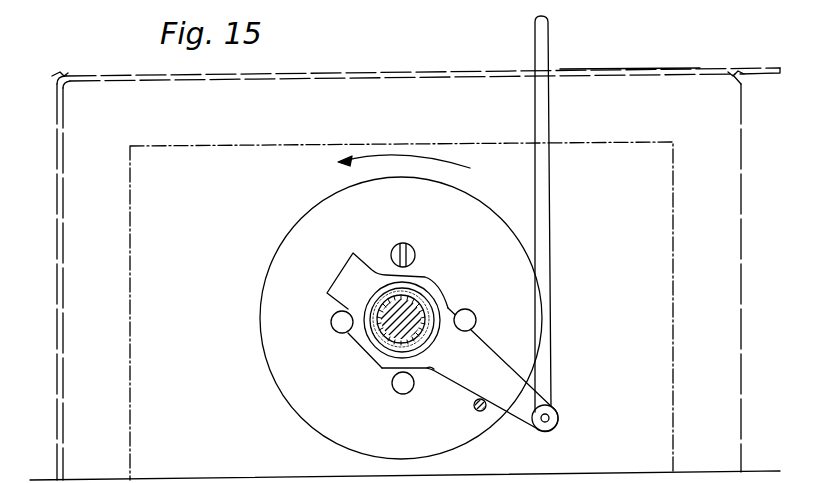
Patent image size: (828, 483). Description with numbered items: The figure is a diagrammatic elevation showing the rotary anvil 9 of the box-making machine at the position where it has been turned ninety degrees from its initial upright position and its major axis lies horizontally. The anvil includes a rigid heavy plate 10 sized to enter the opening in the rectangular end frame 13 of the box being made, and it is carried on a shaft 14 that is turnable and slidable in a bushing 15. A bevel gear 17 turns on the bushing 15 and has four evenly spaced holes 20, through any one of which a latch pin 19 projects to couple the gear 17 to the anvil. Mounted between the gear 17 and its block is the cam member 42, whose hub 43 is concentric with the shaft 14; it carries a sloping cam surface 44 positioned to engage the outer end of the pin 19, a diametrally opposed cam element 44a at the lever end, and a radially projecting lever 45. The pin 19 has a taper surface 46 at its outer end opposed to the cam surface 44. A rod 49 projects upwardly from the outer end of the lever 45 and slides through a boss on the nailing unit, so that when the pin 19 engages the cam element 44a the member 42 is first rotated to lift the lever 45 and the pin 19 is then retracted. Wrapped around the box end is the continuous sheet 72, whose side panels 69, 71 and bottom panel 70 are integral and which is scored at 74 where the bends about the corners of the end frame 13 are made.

The rotary anvil 9 is at (678, 312).
The plate 10 is at (638, 139).
The end frame 13 is at (742, 215).
The shaft 14 is at (386, 331).
The bushing 15 is at (416, 299).
The bevel gear 17 is at (273, 331).
The latch pin 19 is at (395, 247).
The hole 20 is at (335, 324).
The cam member 42 is at (392, 377).
The hub 43 is at (444, 301).
The cam surface 44 is at (375, 268).
The cam element 44a is at (431, 367).
The lever 45 is at (484, 370).
The taper surface 46 is at (414, 250).
The rod 49 is at (550, 115).
The side panel 69 is at (64, 256).
The bottom panel 70 is at (349, 70).
The side panel 71 is at (768, 76).
The wrap-around sheet 72 is at (605, 66).
The score line 74 is at (55, 78).